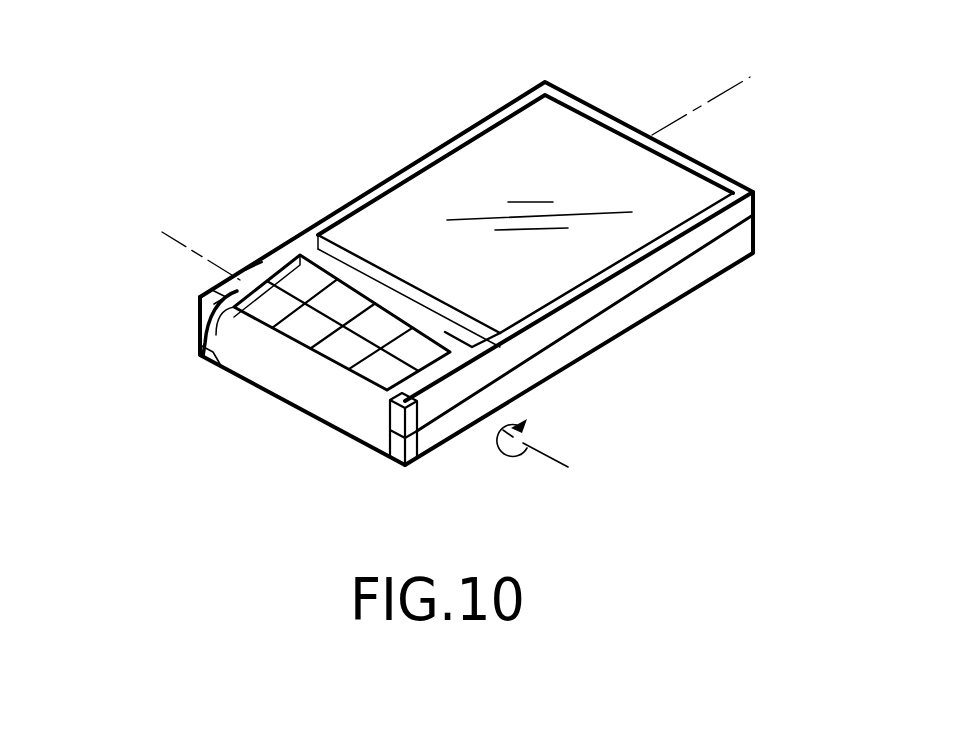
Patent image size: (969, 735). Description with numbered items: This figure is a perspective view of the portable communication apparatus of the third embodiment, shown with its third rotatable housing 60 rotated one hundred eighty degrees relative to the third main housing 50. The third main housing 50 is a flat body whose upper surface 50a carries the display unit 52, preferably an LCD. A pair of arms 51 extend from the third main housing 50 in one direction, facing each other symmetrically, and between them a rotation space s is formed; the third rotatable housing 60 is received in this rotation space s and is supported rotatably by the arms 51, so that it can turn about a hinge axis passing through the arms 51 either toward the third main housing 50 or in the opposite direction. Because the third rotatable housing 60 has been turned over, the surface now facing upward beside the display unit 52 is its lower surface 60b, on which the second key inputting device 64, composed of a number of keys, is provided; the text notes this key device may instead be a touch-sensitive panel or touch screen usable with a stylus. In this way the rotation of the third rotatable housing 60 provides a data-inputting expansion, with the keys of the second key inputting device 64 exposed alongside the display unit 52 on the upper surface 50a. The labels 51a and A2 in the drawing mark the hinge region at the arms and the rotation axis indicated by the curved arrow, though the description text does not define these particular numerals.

The third main housing 50 is at (648, 321).
The upper surface 50a is at (717, 167).
The display unit 52 is at (560, 132).
The third rotatable housing 60 is at (323, 420).
The lower surface 60b is at (230, 312).
The second key inputting device 64 is at (323, 315).
The arms 51 is at (217, 283).
The hinge portion 51a is at (255, 280).
The rotation space s is at (452, 343).
The rotation axis A2 is at (547, 452).